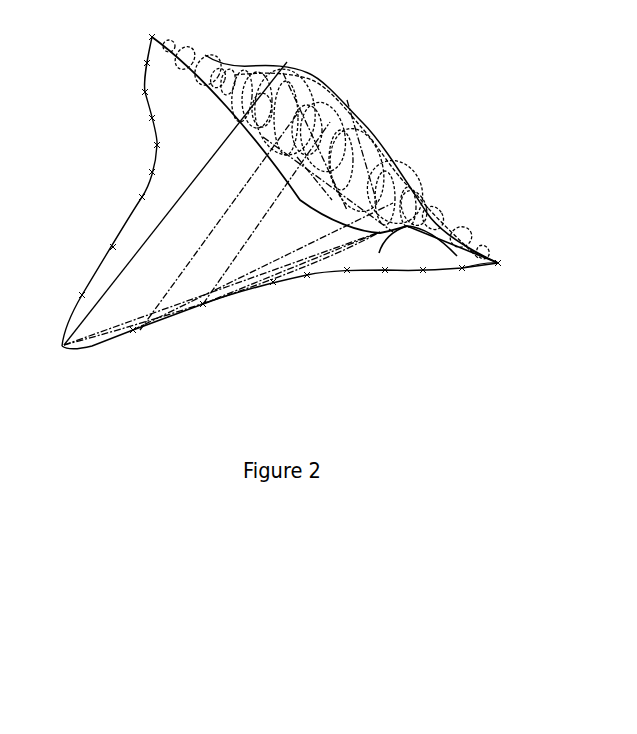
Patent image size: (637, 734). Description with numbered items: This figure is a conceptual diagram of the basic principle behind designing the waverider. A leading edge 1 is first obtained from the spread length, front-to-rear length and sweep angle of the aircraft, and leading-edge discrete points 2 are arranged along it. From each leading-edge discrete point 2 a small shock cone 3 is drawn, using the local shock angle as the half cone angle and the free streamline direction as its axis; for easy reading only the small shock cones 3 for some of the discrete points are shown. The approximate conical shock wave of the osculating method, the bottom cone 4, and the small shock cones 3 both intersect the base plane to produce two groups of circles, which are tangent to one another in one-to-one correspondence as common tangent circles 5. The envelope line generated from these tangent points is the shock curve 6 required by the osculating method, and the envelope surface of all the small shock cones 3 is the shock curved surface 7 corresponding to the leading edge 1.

The leading edge 1 is at (176, 317).
The leading-edge discrete point 2 is at (203, 306).
The small shock cone 3 is at (252, 243).
The bottom cone 4 is at (323, 200).
The common tangent circle 5 is at (385, 272).
The shock curve 6 is at (454, 257).
The shock curved surface 7 is at (479, 269).